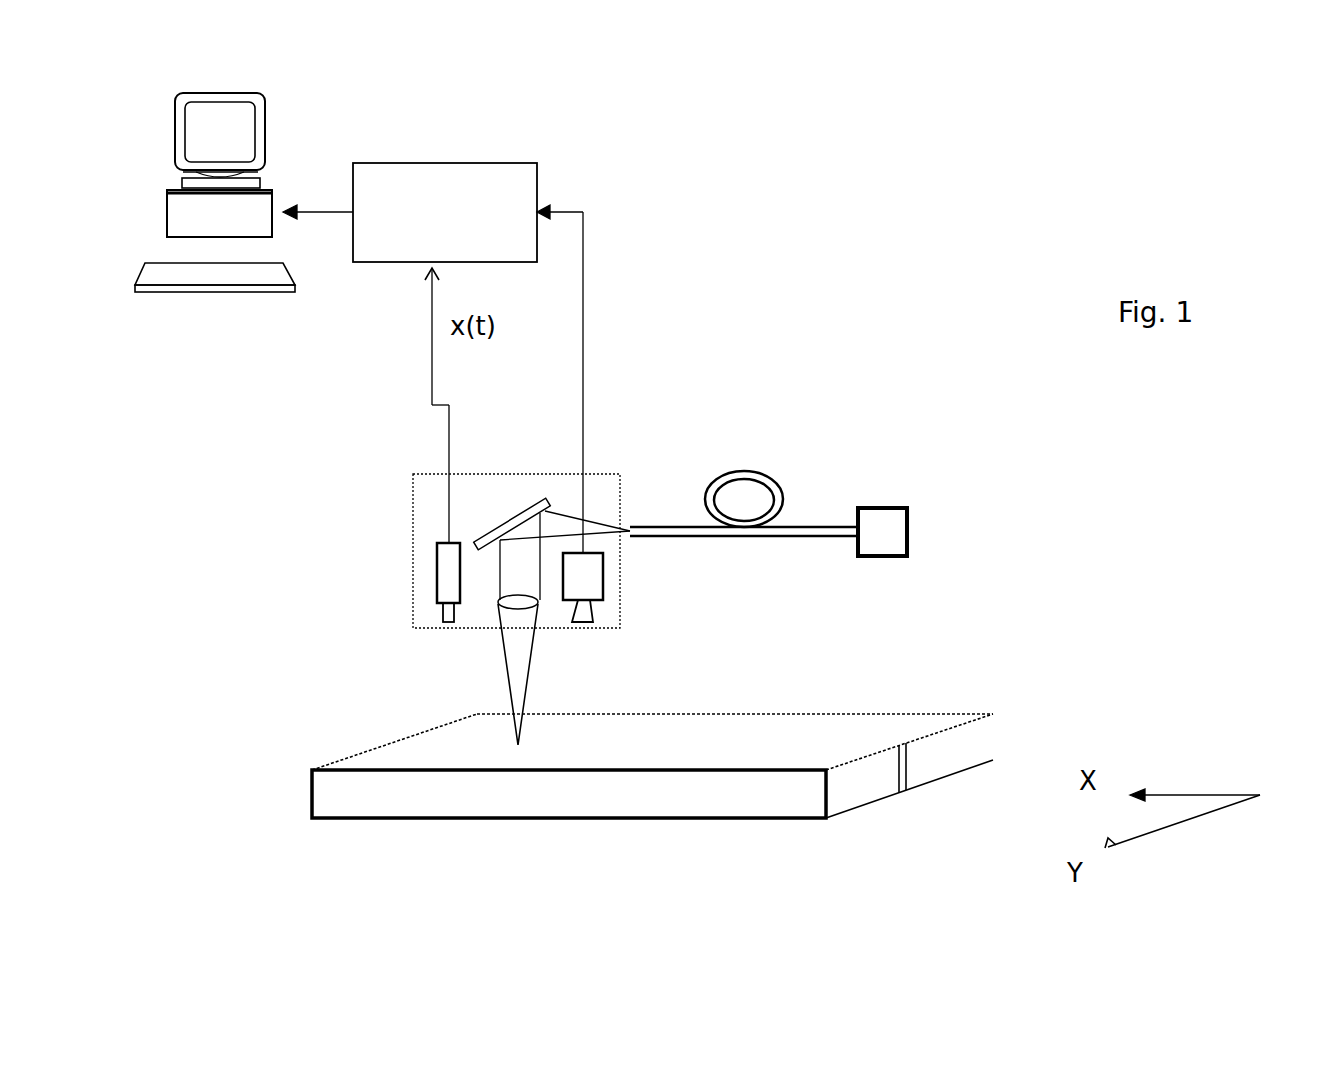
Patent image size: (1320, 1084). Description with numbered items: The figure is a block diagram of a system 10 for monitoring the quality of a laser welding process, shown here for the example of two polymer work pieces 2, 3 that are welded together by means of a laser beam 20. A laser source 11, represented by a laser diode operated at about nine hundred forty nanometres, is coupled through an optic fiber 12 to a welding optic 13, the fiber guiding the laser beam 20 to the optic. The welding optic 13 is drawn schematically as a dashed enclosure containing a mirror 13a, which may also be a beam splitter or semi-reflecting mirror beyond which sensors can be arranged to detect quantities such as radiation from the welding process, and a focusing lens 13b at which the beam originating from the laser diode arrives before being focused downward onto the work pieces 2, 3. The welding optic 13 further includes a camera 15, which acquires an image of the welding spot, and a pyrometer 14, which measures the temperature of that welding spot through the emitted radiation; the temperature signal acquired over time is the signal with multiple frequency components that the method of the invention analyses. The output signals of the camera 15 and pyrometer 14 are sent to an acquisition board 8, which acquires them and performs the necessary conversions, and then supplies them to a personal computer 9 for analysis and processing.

The polymer work piece 2 is at (782, 822).
The polymer work piece 3 is at (947, 733).
The acquisition board 8 is at (480, 163).
The personal computer 9 is at (272, 290).
The system for monitoring the quality of a laser welding process 10 is at (868, 348).
The laser source 11 is at (892, 537).
The optic fiber 12 is at (778, 480).
The welding optic 13 is at (413, 525).
The mirror 13a is at (507, 522).
The focusing lens 13b is at (500, 606).
The pyrometer 14 is at (437, 575).
The camera 15 is at (590, 588).
The laser beam 20 is at (535, 673).